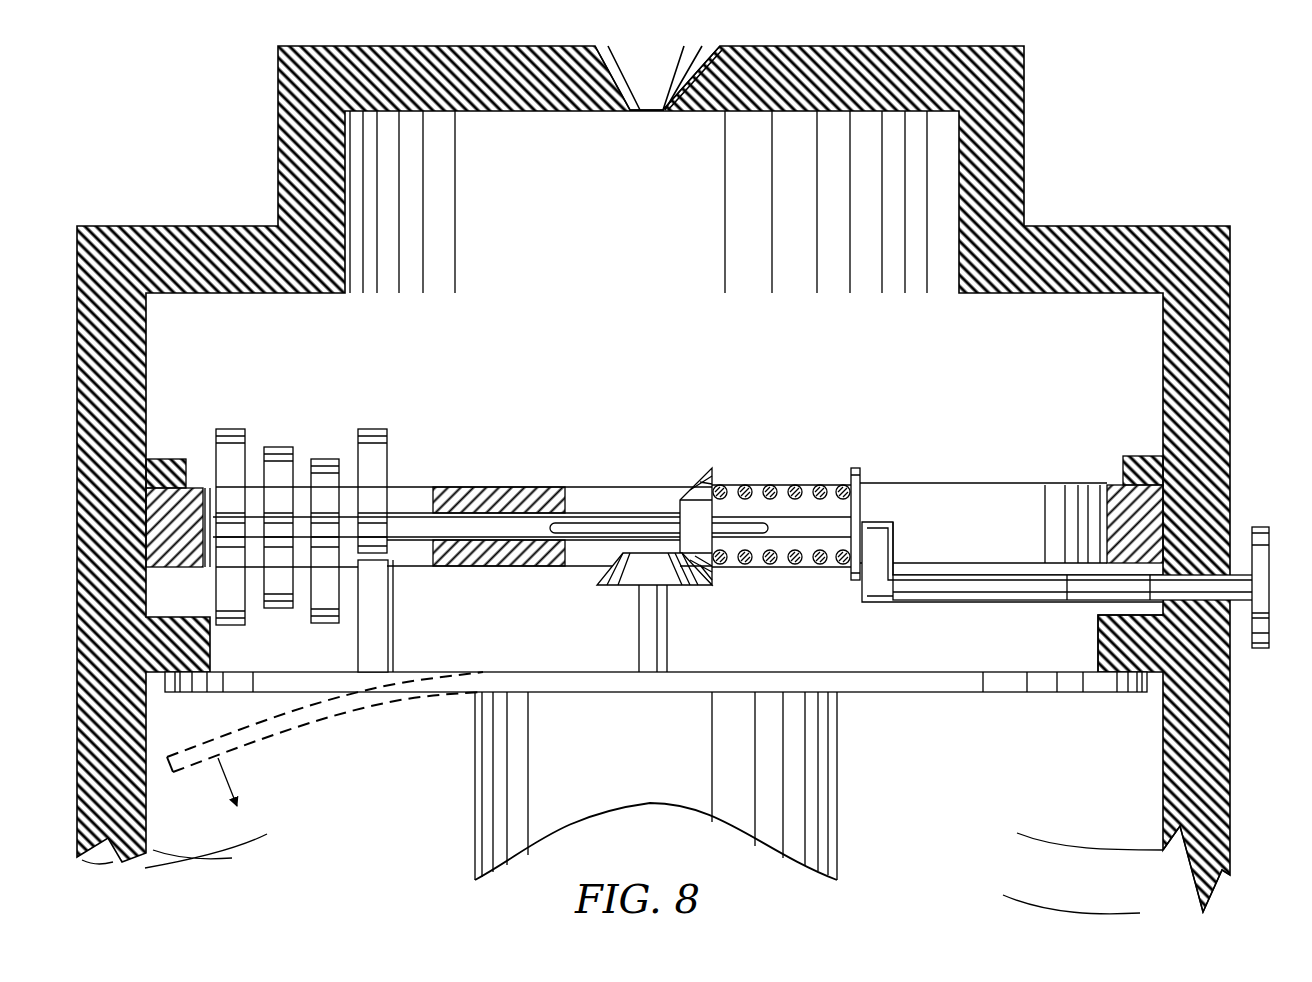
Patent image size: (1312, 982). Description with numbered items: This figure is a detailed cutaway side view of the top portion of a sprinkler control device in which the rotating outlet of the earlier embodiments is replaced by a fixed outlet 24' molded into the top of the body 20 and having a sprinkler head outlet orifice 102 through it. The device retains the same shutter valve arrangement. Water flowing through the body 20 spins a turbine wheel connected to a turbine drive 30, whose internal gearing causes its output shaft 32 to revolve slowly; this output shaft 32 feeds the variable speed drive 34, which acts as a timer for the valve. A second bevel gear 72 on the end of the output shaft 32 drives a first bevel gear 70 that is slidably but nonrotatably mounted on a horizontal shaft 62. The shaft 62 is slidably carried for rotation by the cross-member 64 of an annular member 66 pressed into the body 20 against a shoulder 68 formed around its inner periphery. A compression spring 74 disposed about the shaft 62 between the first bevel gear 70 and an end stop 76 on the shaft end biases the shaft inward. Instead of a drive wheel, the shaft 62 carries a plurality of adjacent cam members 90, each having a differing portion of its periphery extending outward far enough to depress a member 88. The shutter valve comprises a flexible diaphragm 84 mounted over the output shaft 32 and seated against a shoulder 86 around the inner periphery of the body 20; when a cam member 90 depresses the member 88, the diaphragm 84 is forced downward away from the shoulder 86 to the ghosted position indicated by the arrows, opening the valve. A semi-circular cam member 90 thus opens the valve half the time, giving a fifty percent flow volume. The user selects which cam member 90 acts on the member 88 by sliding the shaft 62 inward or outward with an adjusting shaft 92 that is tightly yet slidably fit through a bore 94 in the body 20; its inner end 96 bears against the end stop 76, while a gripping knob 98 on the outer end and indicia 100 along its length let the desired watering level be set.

The body 20 is at (1117, 816).
The fixed outlet 24' is at (653, 479).
The turbine drive 30 is at (810, 803).
The output shaft 32 is at (660, 608).
The variable speed drive 34 is at (740, 589).
The shaft 62 is at (463, 520).
The cross-member 64 is at (545, 487).
The annular member 66 is at (1105, 520).
The shoulder 68 is at (1125, 458).
The first bevel gear 70 is at (692, 495).
The second bevel gear 72 is at (632, 570).
The compression spring 74 is at (775, 487).
The end stop 76 is at (862, 472).
The flexible diaphragm 84 is at (240, 683).
The shoulder 86 is at (203, 656).
The member 88 is at (380, 605).
The cam members 90 is at (370, 430).
The adjusting shaft 92 is at (966, 601).
The bore 94 is at (1230, 660).
The inner end 96 is at (893, 548).
The gripping knob 98 is at (1262, 527).
The indicia 100 is at (1065, 590).
The sprinkler head outlet orifice 102 is at (653, 85).